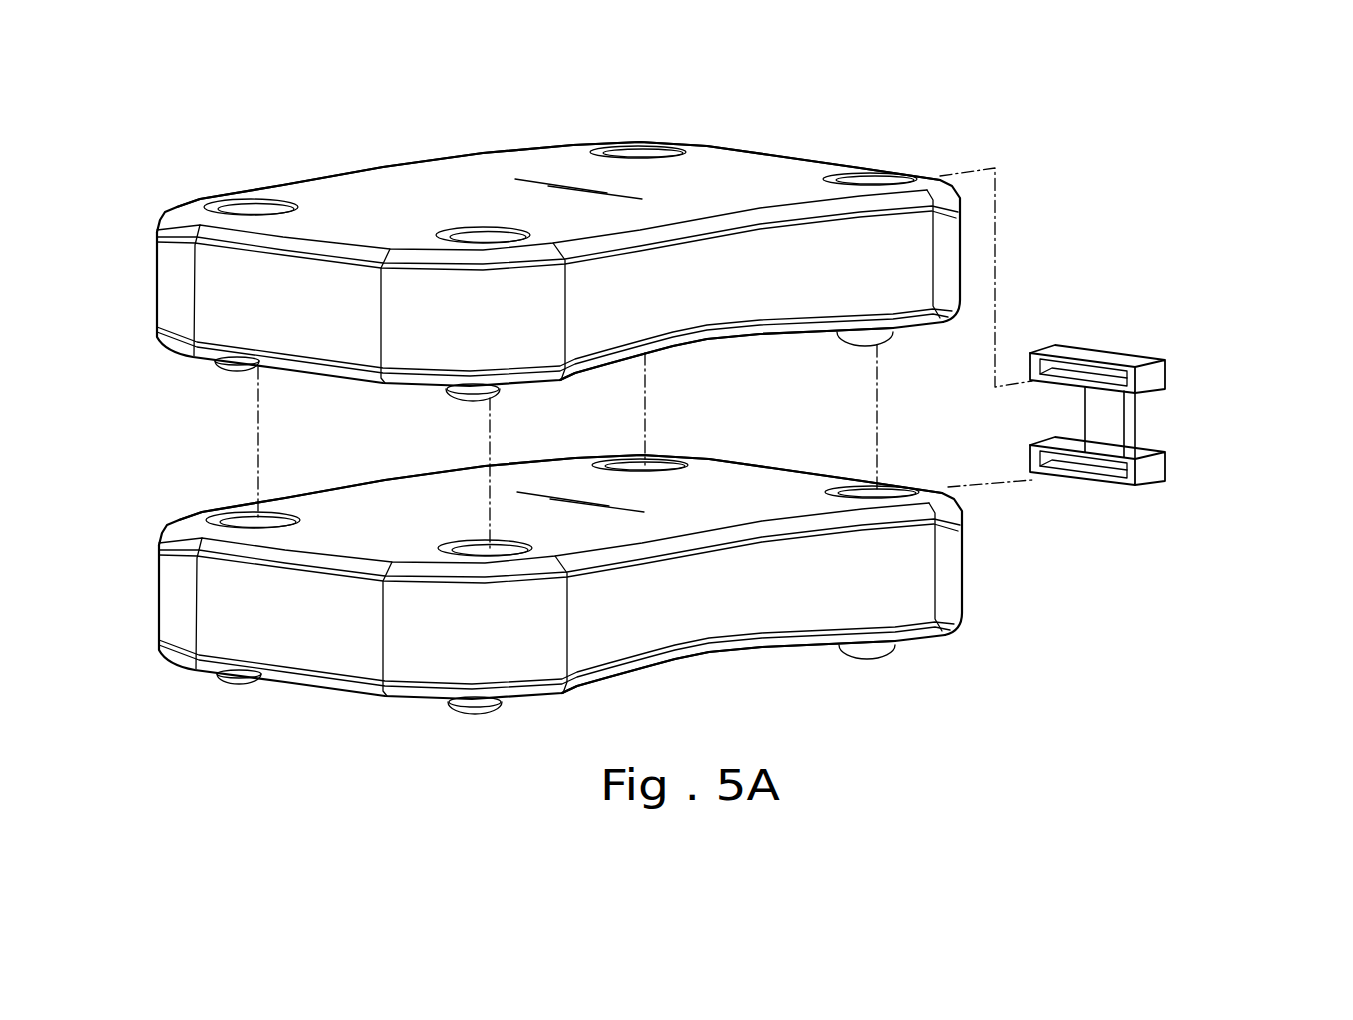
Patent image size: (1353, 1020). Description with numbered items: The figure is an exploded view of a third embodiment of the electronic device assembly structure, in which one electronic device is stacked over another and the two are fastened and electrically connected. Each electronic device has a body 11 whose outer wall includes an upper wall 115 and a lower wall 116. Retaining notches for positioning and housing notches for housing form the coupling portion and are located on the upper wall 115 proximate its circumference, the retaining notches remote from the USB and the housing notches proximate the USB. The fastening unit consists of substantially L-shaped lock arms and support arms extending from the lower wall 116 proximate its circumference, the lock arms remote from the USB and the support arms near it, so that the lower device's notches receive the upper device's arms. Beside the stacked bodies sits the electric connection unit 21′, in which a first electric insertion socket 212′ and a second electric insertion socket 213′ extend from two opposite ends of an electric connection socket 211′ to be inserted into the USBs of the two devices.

The body 11 is at (590, 142).
The upper wall 115 is at (543, 163).
The lower wall 116 is at (663, 353).
The electric connection unit 21′ is at (1243, 366).
The electric connection socket 211′ is at (1127, 423).
The first electric insertion socket 212′ is at (1111, 357).
The second electric insertion socket 213′ is at (1135, 475).